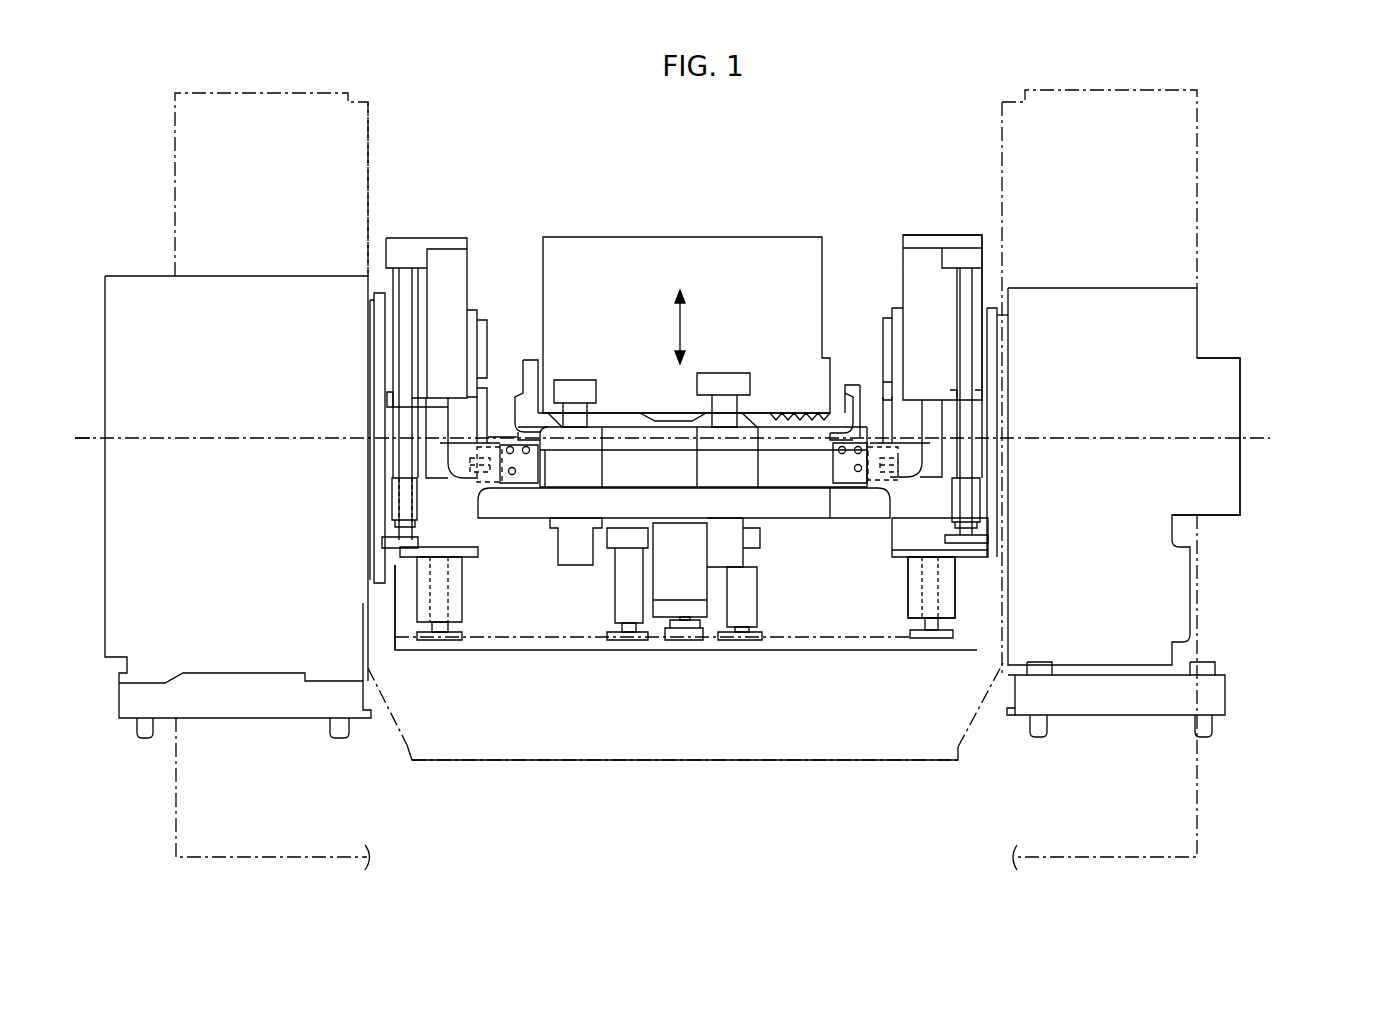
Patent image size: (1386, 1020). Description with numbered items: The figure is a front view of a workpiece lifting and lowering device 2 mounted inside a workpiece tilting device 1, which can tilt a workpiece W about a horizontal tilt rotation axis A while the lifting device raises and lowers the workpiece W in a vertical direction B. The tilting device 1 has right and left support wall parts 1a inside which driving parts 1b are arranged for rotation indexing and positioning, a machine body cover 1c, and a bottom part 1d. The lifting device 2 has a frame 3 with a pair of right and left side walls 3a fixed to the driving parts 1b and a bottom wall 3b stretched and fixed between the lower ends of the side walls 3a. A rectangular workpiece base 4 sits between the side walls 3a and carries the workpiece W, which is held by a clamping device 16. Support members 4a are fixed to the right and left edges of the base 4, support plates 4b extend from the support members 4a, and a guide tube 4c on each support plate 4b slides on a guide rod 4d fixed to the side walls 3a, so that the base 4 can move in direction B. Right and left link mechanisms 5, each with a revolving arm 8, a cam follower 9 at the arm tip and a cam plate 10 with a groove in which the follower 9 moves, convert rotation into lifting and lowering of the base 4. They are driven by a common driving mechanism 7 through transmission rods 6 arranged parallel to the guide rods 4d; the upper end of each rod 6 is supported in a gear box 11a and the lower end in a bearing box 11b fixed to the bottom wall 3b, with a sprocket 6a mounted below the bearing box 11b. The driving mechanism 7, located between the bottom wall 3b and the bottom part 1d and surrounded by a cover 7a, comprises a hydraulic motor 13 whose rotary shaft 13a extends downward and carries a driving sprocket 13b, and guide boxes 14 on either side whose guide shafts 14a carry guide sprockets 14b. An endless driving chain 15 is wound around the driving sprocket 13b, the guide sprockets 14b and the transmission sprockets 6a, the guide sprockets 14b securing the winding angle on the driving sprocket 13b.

The workpiece tilting device 1 is at (1206, 119).
The support wall part 1a is at (263, 276).
The driving part 1b is at (378, 292).
The machine body cover 1c is at (1197, 222).
The bottom part 1d is at (870, 760).
The workpiece lifting and lowering device 2 is at (917, 226).
The frame 3 is at (792, 521).
The side wall 3a is at (388, 352).
The bottom wall 3b is at (830, 506).
The workpiece base 4 is at (627, 424).
The support member 4a is at (833, 456).
The support plate 4b is at (492, 484).
The guide tube 4c is at (398, 493).
The guide rod 4d is at (395, 432).
The link mechanism 5 is at (491, 308).
The transmission rod 6 is at (435, 412).
The sprocket 6a is at (931, 640).
The driving mechanism 7 is at (693, 705).
The cover 7a is at (420, 653).
The revolving arm 8 is at (488, 407).
The cam follower 9 is at (498, 484).
The cam plate 10 is at (478, 474).
The gear box 11a is at (448, 268).
The bearing box 11b is at (955, 588).
The hydraulic motor 13 is at (686, 620).
The rotary shaft 13a is at (703, 605).
The driving sprocket 13b is at (677, 641).
The guide box 14 is at (609, 603).
The guide shaft 14a is at (612, 630).
The guide sprocket 14b is at (632, 640).
The endless driving chain 15 is at (547, 637).
The clamping device 16 is at (572, 380).
The workpiece W is at (772, 300).
The horizontal tilt rotation axis A is at (1218, 437).
The vertical direction B is at (678, 330).